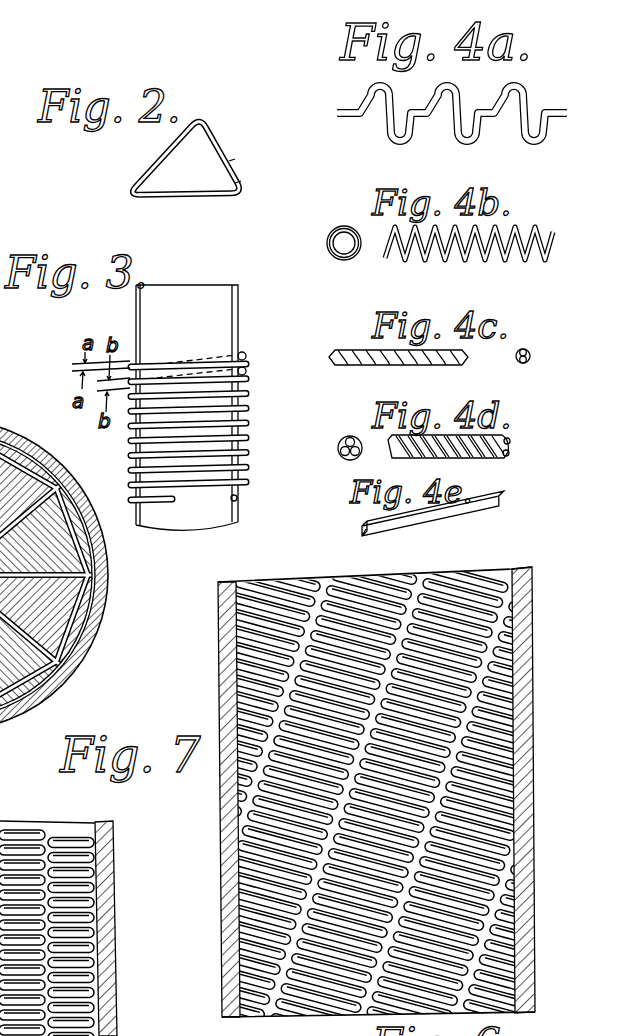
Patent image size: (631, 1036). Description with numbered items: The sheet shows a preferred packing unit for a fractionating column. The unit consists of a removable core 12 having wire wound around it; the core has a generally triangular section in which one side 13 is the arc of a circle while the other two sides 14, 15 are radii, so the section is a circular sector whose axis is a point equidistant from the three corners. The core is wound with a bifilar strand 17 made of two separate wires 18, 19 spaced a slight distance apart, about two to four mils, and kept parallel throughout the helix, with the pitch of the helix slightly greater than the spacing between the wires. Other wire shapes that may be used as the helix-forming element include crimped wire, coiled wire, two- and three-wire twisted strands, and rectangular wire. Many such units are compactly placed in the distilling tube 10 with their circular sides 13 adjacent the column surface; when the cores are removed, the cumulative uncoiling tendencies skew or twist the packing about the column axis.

In FIG. 6, the distilling tube 10 is at (219, 662).
In FIG. 7, the distilling tube 10 is at (105, 883).
In FIG. 2, the removable core 12 is at (201, 173).
In FIG. 3, the removable core 12 is at (201, 300).
In FIG. 5, the removable core 12 is at (63, 611).
In FIG. 7, the removable core 12 is at (7, 835).
In FIG. 2, the side 13 is at (231, 128).
In FIG. 5, the side 13 is at (0, 412).
In FIG. 2, the side 14 is at (158, 157).
In FIG. 2, the side 15 is at (198, 203).
In FIG. 3, the bifilar strand 17 is at (248, 357).
In FIG. 3, the wire 18 is at (249, 376).
In FIG. 3, the wire 19 is at (249, 396).